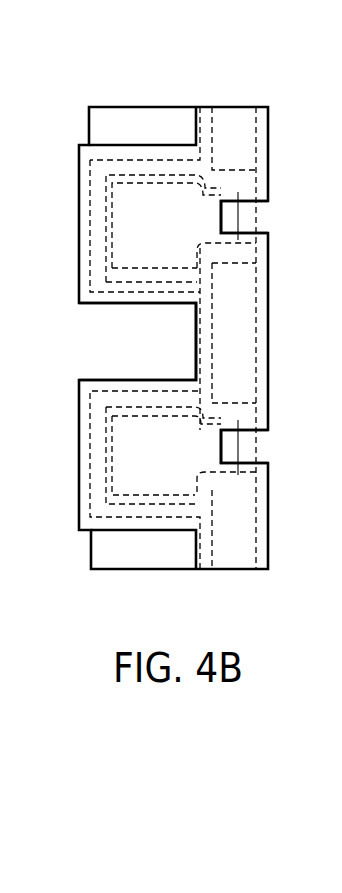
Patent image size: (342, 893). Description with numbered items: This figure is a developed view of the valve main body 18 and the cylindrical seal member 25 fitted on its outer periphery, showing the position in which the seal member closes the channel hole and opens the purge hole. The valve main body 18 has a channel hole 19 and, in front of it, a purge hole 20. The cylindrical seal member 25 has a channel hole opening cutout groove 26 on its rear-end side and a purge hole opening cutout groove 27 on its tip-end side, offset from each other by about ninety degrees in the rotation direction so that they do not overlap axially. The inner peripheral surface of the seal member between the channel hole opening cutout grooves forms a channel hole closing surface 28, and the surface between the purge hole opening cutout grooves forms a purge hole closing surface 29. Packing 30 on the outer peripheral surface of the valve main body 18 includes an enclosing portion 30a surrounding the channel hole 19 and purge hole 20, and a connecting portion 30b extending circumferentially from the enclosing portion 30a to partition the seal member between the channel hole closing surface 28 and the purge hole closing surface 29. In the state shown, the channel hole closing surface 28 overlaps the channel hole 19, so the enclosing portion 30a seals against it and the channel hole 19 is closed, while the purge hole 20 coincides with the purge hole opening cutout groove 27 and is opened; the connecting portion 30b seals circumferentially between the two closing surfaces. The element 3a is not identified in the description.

The valve main body 18 is at (146, 103).
The cylindrical seal member 25 is at (238, 106).
The enclosing portion 30a is at (133, 163).
The packing 30 is at (88, 241).
The connecting portion 30b is at (213, 321).
The purge hole closing surface 29 is at (238, 329).
The channel hole closing surface 28 is at (118, 249).
The channel hole 19 is at (134, 209).
The channel hole opening cutout groove 26 is at (117, 355).
The purge hole opening cutout groove 27 is at (273, 198).
The purge hole 20 is at (239, 218).
The lower end portion of tooth 3a is at (158, 514).